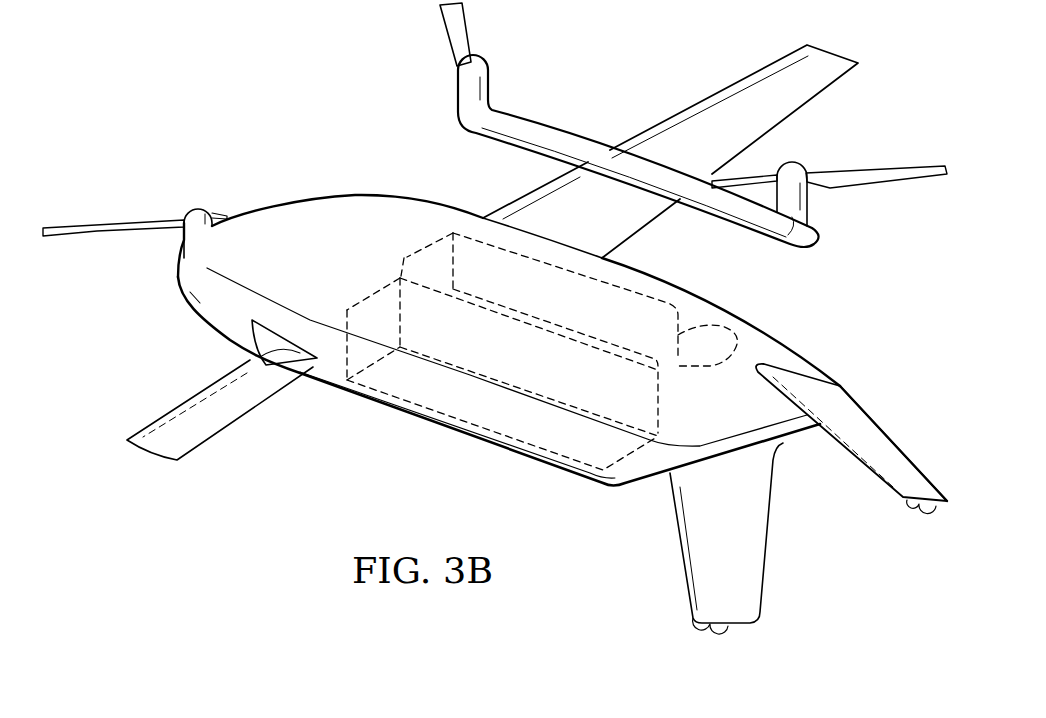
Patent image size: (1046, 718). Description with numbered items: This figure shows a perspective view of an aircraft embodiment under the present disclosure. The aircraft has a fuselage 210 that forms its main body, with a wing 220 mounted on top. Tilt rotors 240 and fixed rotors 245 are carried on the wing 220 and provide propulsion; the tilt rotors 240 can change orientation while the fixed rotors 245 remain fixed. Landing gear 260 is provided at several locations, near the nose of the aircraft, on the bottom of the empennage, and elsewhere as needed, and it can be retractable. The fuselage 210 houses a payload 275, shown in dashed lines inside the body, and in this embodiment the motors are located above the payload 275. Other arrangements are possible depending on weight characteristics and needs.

The fuselage 210 is at (322, 196).
The wing 220 is at (708, 97).
The tilt rotor 240 is at (446, 26).
The fixed rotor 245 is at (852, 172).
The landing gear 260 is at (403, 258).
The payload 275 is at (659, 395).